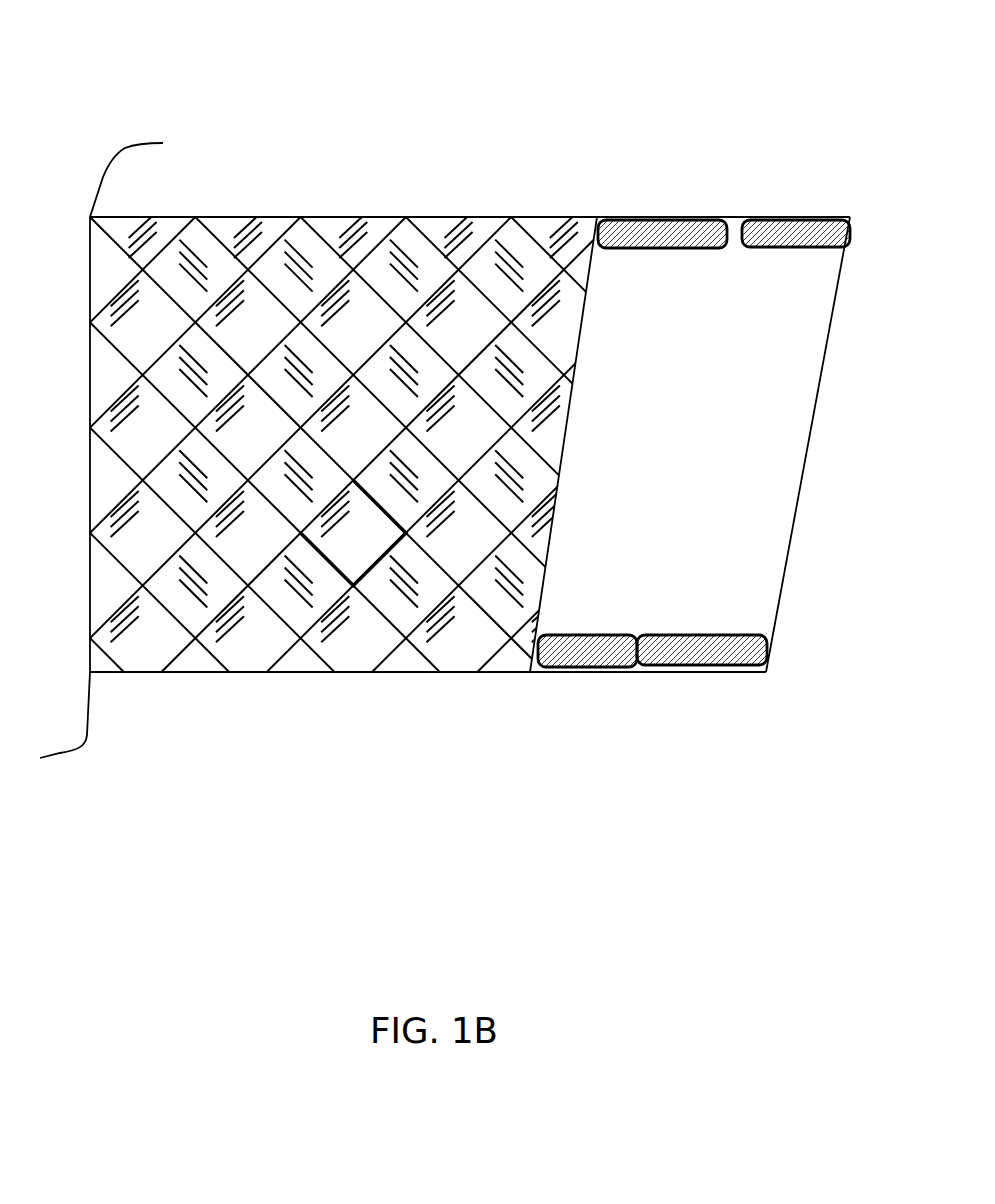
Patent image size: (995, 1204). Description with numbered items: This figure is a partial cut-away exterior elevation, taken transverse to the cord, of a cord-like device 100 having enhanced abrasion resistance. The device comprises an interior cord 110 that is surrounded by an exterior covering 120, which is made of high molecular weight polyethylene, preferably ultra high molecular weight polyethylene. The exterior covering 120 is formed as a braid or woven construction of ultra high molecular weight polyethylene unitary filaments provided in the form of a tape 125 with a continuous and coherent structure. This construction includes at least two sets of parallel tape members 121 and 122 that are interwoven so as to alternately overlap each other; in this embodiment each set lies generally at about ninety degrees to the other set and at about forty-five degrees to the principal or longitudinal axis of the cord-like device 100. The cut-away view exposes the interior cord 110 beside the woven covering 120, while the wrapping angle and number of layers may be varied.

The cord-like device 100 is at (370, 223).
The interior cord 110 is at (698, 519).
The exterior covering 120 is at (555, 245).
The first set of parallel tape members 121 is at (358, 657).
The second set of parallel tape members 122 is at (285, 583).
The tape 125 is at (693, 218).